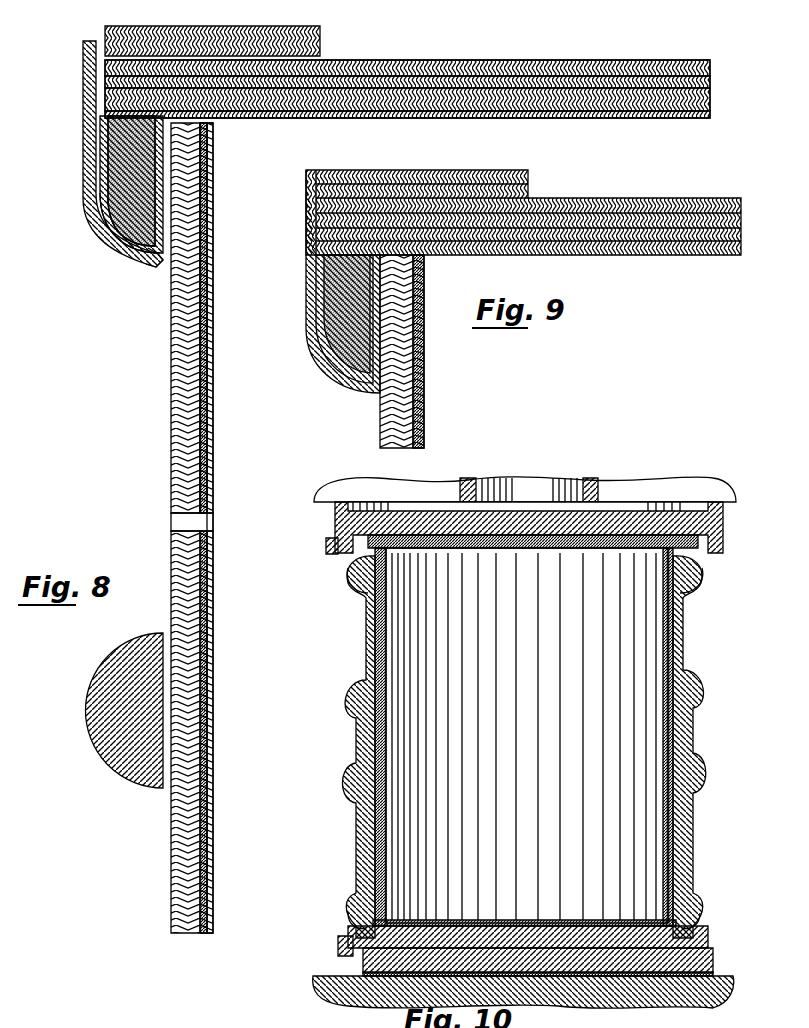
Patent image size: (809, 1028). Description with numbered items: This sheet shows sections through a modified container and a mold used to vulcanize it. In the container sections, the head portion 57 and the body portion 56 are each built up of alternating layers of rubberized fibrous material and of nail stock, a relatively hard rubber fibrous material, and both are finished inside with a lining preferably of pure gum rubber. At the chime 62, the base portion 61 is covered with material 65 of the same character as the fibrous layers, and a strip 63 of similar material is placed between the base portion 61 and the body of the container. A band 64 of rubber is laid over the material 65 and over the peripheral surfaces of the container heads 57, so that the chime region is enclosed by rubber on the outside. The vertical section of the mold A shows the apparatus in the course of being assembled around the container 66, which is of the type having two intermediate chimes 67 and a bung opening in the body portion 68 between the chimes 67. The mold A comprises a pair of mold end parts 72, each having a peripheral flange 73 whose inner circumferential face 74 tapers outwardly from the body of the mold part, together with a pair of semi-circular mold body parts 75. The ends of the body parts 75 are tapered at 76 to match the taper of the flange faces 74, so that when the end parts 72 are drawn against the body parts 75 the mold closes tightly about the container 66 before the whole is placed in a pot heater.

In FIG. 8, the body portion 56 is at (163, 383).
In FIG. 8, the head portion 57 is at (442, 52).
In FIG. 8, the base portion 61 is at (105, 132).
In FIG. 9, the chime 62 is at (298, 264).
In FIG. 8, the strip 63 is at (146, 254).
In FIG. 8, the band 64 is at (75, 180).
In FIG. 8, the material 65 is at (110, 242).
In FIG. 10, the container 66 is at (662, 606).
In FIG. 10, the intermediate chime 67 is at (664, 680).
In FIG. 10, the body portion 68 is at (660, 645).
In FIG. 10, the mold end part 72 is at (327, 490).
In FIG. 10, the peripheral flange 73 is at (355, 535).
In FIG. 10, the inner circumferential face 74 is at (700, 934).
In FIG. 10, the mold body part 75 is at (352, 838).
In FIG. 10, the tapered end 76 is at (345, 568).
In FIG. 10, the mold A is at (690, 622).